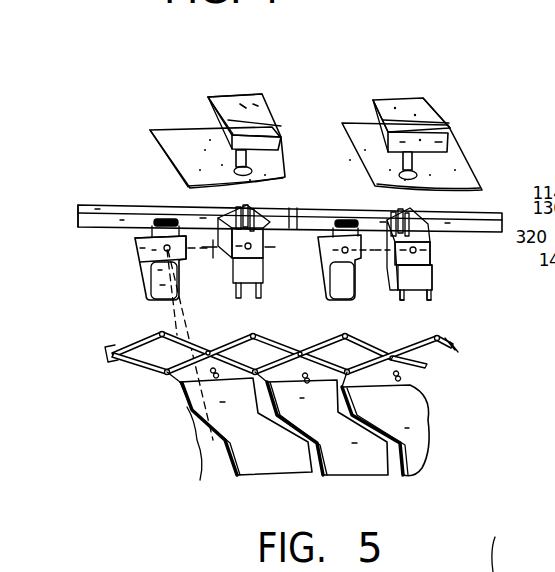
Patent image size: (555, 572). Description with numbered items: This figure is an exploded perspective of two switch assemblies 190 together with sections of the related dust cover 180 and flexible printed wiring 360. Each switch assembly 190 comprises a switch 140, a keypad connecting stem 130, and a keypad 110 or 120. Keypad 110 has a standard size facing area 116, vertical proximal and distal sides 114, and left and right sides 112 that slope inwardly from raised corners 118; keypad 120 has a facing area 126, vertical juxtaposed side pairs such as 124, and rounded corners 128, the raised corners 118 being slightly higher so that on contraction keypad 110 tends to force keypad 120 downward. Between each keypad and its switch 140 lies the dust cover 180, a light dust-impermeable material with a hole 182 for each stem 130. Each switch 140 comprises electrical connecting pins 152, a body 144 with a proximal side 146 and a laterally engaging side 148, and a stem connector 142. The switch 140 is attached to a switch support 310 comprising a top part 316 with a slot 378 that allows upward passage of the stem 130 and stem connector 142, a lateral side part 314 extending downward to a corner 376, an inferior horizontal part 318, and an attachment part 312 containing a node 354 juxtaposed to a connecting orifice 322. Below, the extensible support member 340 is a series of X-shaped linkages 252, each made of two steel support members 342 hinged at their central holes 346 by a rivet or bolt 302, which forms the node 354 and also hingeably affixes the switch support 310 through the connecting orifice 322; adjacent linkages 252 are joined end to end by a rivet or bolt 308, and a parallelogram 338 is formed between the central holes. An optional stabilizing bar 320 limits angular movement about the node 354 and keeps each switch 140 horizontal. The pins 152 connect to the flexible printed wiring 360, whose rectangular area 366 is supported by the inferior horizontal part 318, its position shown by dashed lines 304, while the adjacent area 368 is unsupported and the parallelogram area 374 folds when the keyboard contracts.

The keypad 110 is at (219, 88).
The left and right sides 112 is at (210, 122).
The vertical proximal and distal sides 114 is at (240, 98).
The facing area 116 is at (252, 101).
The raised corners 118 is at (207, 100).
The keypad 120 is at (398, 90).
The side pair 124 is at (385, 140).
The facing area 126 is at (430, 122).
The rounded corners 128 is at (370, 112).
The keypad connecting stem 130 is at (263, 157).
The switch 140 is at (272, 237).
The stem connector 142 is at (408, 212).
The body 144 is at (435, 274).
The proximal side 146 is at (432, 249).
The laterally engaging side 148 is at (382, 228).
The electrical connecting pins 152 is at (398, 295).
The dust cover 180 is at (175, 136).
The hole 182 is at (150, 137).
The switch assembly 190 is at (158, 157).
The X-shaped linkage 252 is at (163, 370).
The rivet or bolt 302 is at (323, 405).
The dashed lines 304 is at (165, 324).
The rivet or bolt 308 is at (172, 380).
The switch support 310 is at (107, 232).
The attachment part 312 is at (156, 248).
The lateral side part 314 is at (133, 250).
The top part 316 is at (142, 233).
The inferior horizontal part 318 is at (160, 300).
The stabilizing bar 320 is at (85, 202).
The connecting orifice 322 is at (173, 258).
The parallelogram 338 is at (348, 370).
The extensible support member 340 is at (456, 330).
The support member 342 is at (240, 374).
The central hole 346 is at (302, 352).
The node 354 is at (182, 386).
The flexible printed wiring 360 is at (279, 468).
The rectangular area 366 is at (190, 412).
The area 368 is at (545, 560).
The parallelogram area 374 is at (223, 448).
The corner 376 is at (148, 297).
The slot 378 is at (164, 216).